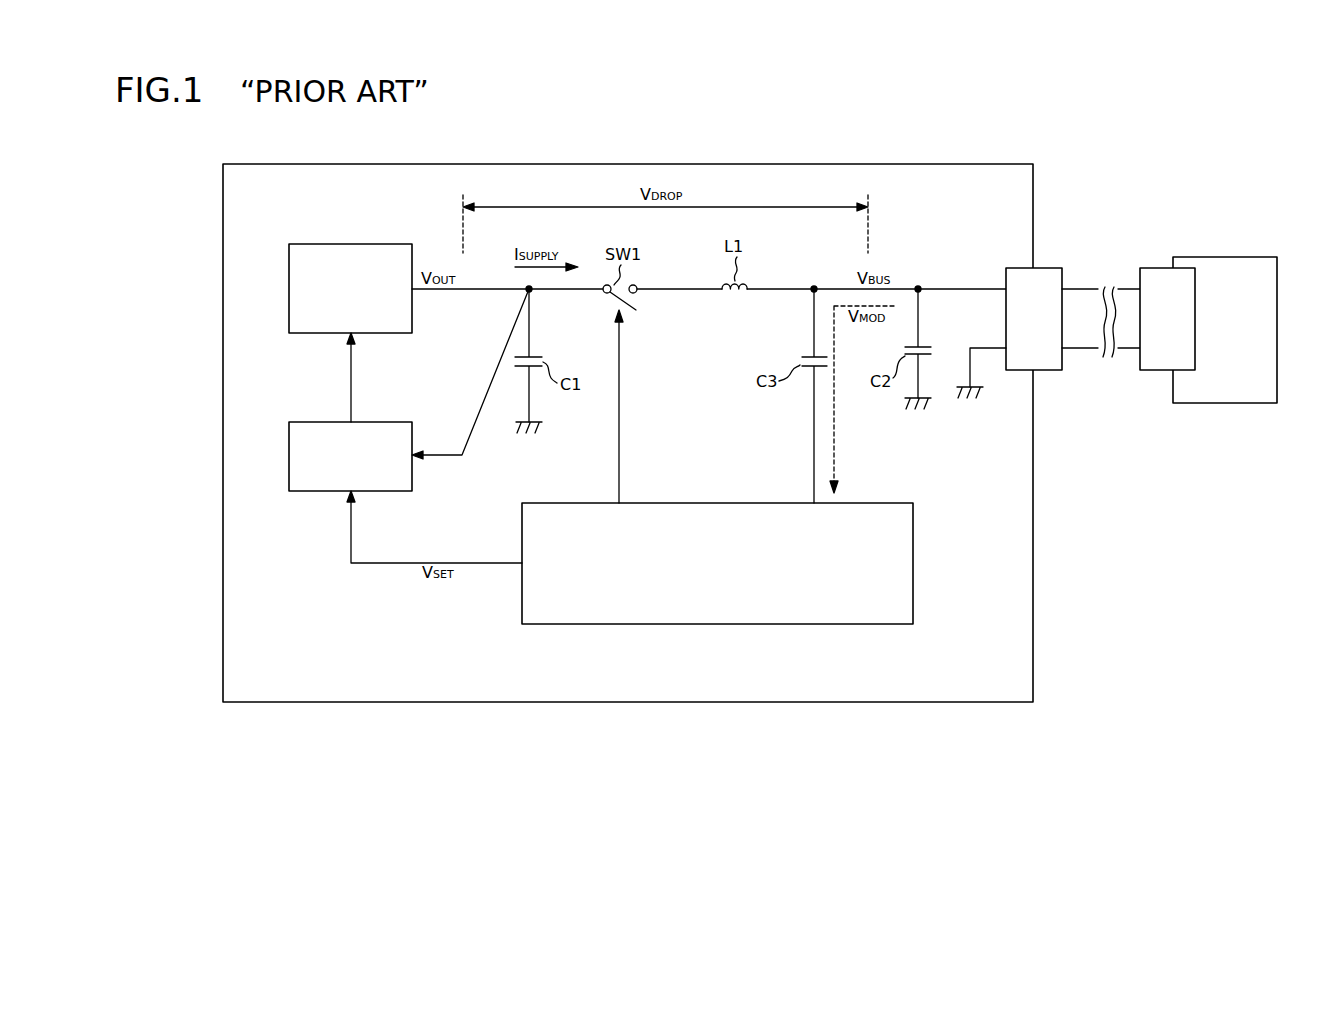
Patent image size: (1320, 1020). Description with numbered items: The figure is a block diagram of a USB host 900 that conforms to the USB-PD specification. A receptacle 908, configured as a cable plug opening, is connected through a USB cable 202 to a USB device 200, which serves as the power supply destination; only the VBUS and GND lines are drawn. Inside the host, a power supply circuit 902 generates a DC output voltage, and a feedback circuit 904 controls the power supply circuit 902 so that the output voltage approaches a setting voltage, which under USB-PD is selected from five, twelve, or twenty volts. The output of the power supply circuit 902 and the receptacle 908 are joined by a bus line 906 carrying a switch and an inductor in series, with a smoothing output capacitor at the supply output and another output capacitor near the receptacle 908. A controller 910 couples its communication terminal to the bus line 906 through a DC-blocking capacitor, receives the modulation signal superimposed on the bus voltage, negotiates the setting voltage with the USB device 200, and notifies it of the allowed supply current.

The USB host 900 is at (757, 703).
The power supply circuit 902 is at (372, 244).
The feedback circuit 904 is at (367, 422).
The bus line 906 is at (962, 288).
The receptacle 908 is at (1057, 268).
The controller 910 is at (710, 625).
The USB device 200 is at (1228, 256).
The USB cable 202 is at (1138, 380).